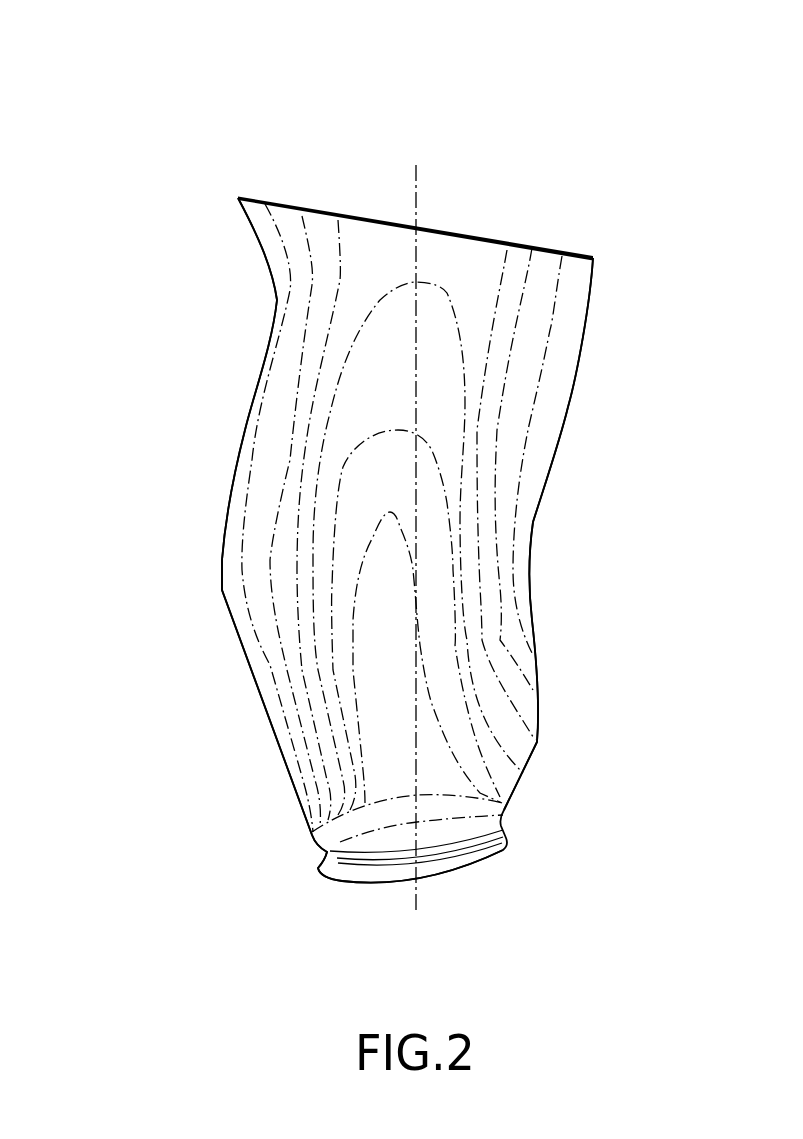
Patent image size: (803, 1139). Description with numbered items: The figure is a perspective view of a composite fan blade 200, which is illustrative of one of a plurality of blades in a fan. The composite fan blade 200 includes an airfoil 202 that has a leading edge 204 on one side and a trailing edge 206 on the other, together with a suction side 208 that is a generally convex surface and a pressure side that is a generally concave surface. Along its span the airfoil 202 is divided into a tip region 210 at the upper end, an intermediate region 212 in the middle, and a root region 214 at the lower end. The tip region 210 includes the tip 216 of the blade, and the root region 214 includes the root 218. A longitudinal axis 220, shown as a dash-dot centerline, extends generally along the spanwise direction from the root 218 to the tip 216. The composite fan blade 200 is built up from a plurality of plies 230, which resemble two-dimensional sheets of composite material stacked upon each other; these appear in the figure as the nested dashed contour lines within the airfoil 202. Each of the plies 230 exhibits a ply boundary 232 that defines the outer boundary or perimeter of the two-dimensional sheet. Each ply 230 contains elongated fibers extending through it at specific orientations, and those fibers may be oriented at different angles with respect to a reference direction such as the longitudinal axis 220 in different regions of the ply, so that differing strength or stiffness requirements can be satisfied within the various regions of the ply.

The composite fan blade 200 is at (153, 108).
The airfoil 202 is at (577, 624).
The leading edge 204 is at (231, 496).
The trailing edge 206 is at (535, 523).
The suction side 208 is at (533, 405).
The tip region 210 is at (228, 242).
The intermediate region 212 is at (186, 574).
The root region 214 is at (271, 834).
The tip 216 is at (370, 220).
The root 218 is at (504, 835).
The longitudinal axis 220 is at (417, 204).
The plies 230 is at (387, 373).
The ply boundary 232 is at (375, 308).